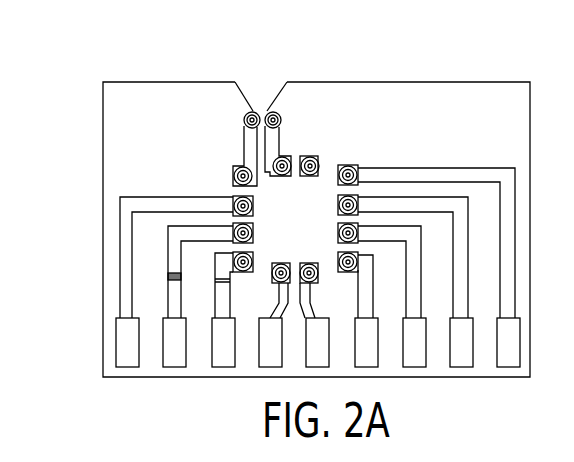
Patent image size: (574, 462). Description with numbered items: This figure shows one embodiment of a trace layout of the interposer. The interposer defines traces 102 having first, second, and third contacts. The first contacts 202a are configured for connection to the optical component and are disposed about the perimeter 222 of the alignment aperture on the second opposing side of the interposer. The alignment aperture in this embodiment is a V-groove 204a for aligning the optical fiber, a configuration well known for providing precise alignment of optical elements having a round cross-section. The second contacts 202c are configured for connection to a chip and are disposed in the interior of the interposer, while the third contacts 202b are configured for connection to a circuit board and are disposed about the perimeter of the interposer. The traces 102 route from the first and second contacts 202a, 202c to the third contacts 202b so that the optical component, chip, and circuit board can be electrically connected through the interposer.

The traces 102 is at (128, 257).
The first contact 202a is at (255, 108).
The third contact 202b is at (128, 343).
The second contact 202c is at (352, 166).
The V-groove 204a is at (238, 88).
The perimeter of the alignment aperture 222 is at (287, 85).